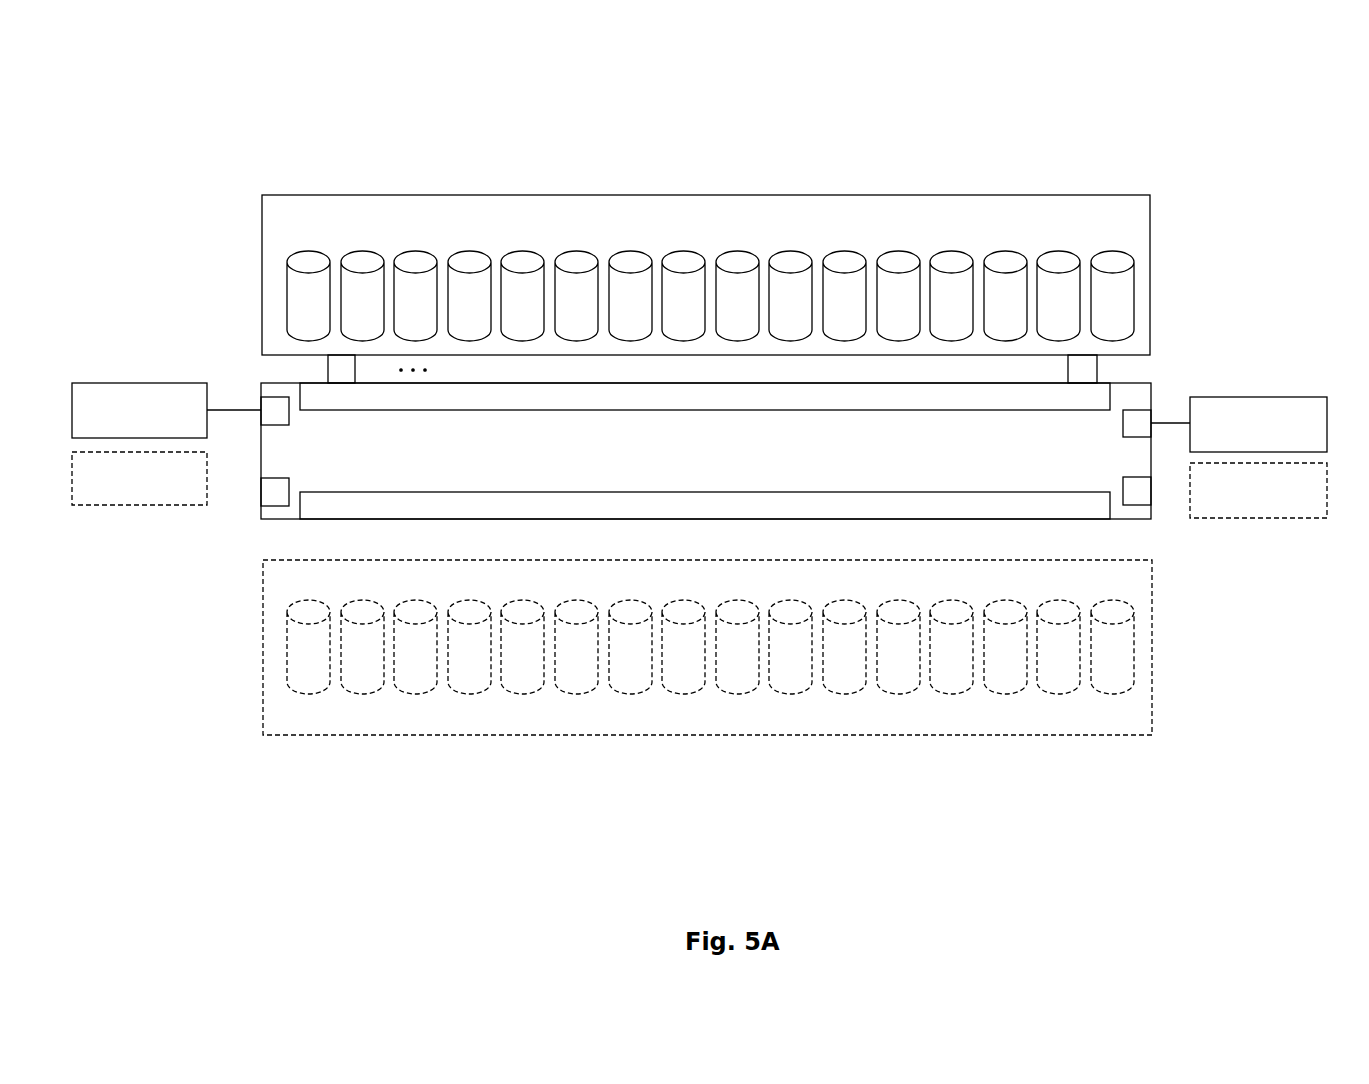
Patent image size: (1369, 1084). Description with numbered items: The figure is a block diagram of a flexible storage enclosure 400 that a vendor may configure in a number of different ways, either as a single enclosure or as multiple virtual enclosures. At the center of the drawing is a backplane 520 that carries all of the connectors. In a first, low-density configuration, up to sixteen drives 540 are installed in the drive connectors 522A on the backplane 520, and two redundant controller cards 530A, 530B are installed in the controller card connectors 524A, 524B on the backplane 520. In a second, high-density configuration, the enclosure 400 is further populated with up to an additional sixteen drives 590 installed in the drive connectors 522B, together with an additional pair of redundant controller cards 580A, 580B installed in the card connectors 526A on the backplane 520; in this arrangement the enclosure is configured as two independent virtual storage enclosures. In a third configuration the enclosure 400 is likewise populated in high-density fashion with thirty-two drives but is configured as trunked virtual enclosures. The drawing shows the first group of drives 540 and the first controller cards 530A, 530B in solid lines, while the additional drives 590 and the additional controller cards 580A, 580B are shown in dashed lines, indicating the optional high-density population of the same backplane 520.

The enclosure 400 is at (276, 126).
The backplane 520 is at (706, 454).
The drive connectors 522A is at (653, 412).
The drive connectors 522B is at (815, 490).
The controller card connector 524A is at (275, 412).
The controller card connector 524B is at (1137, 425).
The card connector 526A is at (275, 492).
The controller card 530A is at (127, 383).
The controller card 530B is at (1272, 397).
The drives 540 is at (706, 275).
The controller card 580A is at (140, 507).
The controller card 580B is at (1298, 520).
The drives 590 is at (707, 647).